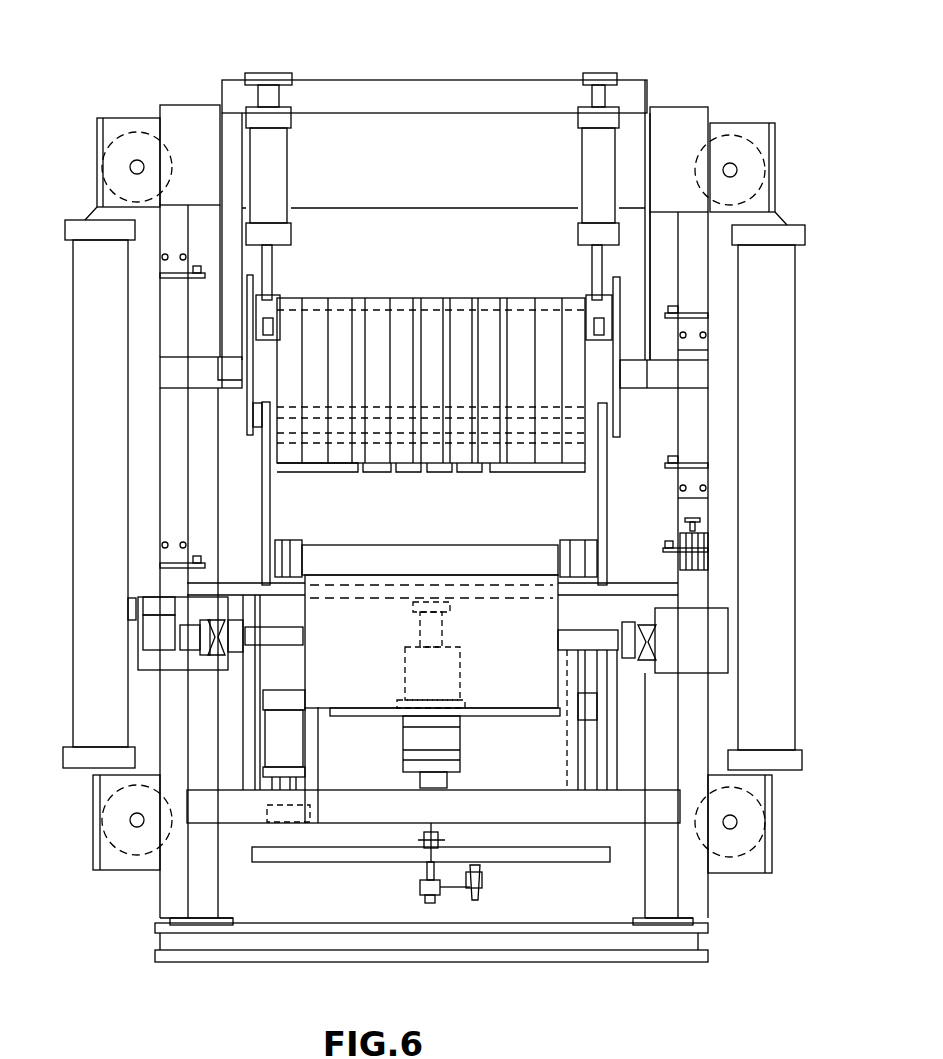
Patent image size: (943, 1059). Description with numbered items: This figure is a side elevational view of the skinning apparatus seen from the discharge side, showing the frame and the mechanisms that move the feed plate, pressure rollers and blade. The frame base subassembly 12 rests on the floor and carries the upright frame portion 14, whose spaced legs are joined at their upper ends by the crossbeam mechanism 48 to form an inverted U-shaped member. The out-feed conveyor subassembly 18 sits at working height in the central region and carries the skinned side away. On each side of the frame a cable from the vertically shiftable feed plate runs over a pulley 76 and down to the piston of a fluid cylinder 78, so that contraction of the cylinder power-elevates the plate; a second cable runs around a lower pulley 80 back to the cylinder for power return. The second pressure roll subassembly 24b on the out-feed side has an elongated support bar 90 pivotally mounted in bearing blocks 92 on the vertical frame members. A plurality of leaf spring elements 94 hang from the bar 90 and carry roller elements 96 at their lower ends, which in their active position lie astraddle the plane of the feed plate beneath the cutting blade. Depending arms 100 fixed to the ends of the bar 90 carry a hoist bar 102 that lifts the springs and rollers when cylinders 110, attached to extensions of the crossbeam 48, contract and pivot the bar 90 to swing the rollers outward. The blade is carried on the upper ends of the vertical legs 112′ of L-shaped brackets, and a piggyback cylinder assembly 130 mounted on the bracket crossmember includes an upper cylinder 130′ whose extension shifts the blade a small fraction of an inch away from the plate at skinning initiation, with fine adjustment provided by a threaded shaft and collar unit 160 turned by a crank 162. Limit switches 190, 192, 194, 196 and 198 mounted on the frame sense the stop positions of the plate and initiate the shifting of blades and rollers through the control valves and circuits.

The frame base subassembly 12 is at (207, 878).
The upright frame portion 14 is at (478, 88).
The out-feed conveyor subassembly 18 is at (470, 548).
The second pressure roll subassembly 24b is at (372, 316).
The crossbeam mechanism 48 is at (443, 173).
The pulley 76 is at (137, 150).
The fluid cylinder 78 is at (434, 495).
The lower pulley 80 is at (100, 818).
The elongated support bar 90 is at (318, 302).
The bearing block 92 is at (277, 292).
The leaf spring element 94 is at (522, 320).
The roller element 96 is at (535, 470).
The depending arm 100 is at (247, 403).
The hoist bar 102 is at (252, 433).
The cylinder 110 is at (272, 160).
The vertical leg 112′ is at (270, 505).
The piggyback cylinder assembly 130 is at (448, 744).
The upper cylinder 130′ is at (405, 676).
The threaded shaft and collar unit 160 is at (427, 830).
The crank 162 is at (482, 878).
The limit switch 190 is at (676, 310).
The limit switch 192 is at (668, 460).
The limit switch 194 is at (665, 547).
The limit switch 196 is at (197, 266).
The limit switch 198 is at (200, 555).